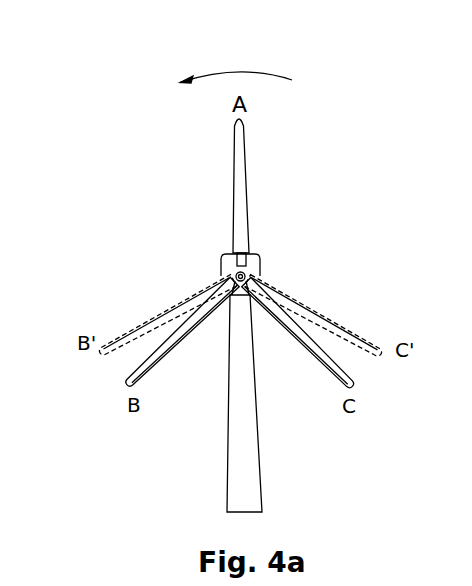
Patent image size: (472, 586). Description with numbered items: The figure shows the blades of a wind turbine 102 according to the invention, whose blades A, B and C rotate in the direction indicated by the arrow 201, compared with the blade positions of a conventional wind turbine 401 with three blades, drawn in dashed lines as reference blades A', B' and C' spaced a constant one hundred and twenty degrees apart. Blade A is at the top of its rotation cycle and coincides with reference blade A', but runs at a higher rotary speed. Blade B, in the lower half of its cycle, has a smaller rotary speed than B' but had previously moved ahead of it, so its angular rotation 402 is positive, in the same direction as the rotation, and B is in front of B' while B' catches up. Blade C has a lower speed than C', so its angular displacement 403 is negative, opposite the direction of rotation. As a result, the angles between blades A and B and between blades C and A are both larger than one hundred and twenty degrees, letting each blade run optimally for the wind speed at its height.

The wind turbine 102 is at (238, 463).
The arrow 201 is at (250, 72).
The conventional wind turbine 401 is at (140, 328).
The angular rotation 402 is at (124, 382).
The angular displacement 403 is at (354, 377).